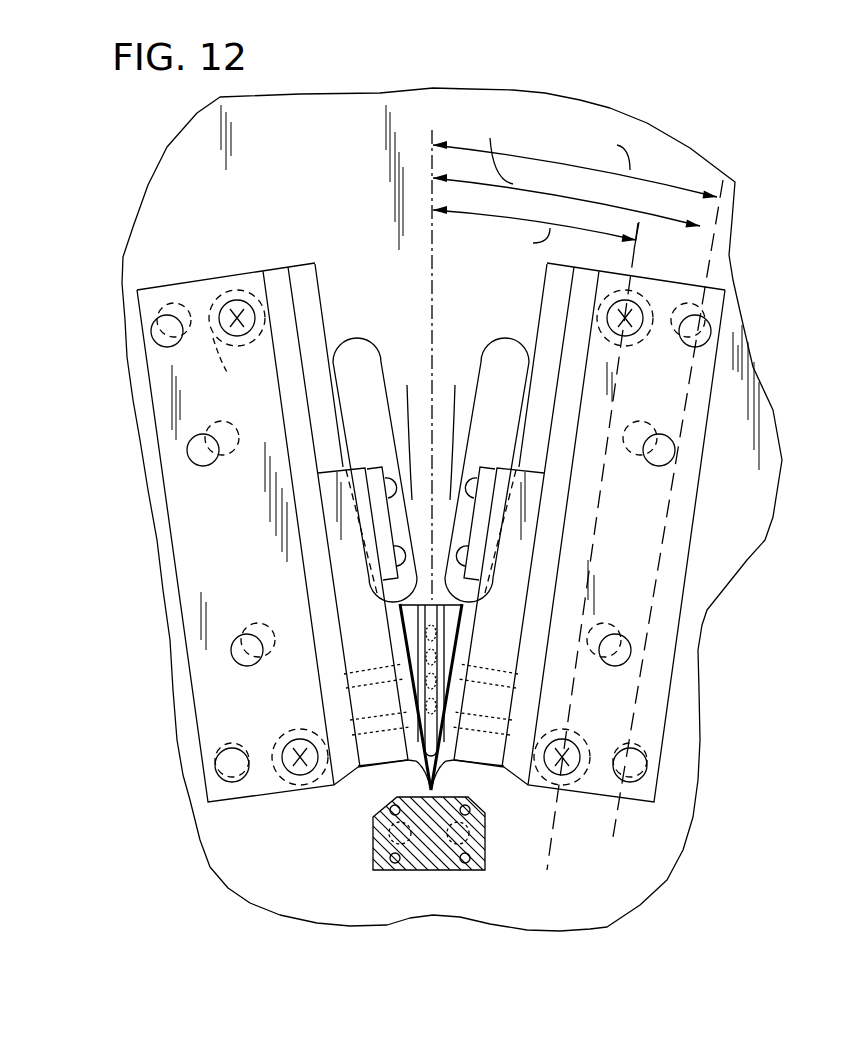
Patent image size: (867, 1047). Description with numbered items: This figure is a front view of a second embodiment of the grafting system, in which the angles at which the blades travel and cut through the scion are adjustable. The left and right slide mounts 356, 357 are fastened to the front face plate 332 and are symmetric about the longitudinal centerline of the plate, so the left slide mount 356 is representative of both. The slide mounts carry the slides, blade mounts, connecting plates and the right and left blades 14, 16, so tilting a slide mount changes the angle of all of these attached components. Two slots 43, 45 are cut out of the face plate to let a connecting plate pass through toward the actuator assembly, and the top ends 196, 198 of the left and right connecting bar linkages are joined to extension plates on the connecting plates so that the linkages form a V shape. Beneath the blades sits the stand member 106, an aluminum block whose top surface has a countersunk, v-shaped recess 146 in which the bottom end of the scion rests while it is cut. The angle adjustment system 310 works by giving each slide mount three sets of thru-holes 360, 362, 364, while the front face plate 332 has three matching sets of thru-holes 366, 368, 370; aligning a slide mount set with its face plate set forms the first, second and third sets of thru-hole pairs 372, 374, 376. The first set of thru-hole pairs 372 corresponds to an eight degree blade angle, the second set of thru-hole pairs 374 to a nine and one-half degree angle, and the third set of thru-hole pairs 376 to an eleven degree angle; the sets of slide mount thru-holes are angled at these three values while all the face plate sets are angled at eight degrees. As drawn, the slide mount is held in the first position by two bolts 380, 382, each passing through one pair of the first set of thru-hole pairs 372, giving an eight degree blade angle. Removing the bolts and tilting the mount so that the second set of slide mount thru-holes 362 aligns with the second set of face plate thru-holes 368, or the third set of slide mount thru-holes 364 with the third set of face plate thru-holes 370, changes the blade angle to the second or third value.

The angle adjustment system 310 is at (120, 574).
The front face plate 332 is at (727, 552).
The left slide mount 356 is at (175, 280).
The right slide mount 357 is at (728, 261).
The first set of thru-hole pairs 372 is at (285, 218).
The first set of slide mount thru-holes 360 is at (220, 302).
The first set of face plate thru-holes 366 is at (241, 275).
The bolt 380 is at (230, 372).
The bolt 382 is at (292, 727).
The second set of thru-hole pairs 374 is at (63, 293).
The second set of face plate thru-holes 368 is at (175, 306).
The second set of slide mount thru-holes 362 is at (152, 348).
The third set of thru-hole pairs 376 is at (72, 412).
The third set of face plate thru-holes 370 is at (205, 421).
The third set of slide mount thru-holes 364 is at (187, 468).
The slot 43 is at (350, 350).
The slot 45 is at (512, 350).
The top end of left connecting bar linkage 196 is at (406, 428).
The top end of right connecting bar linkage 198 is at (462, 428).
The left blade 16 is at (397, 640).
The right blade 14 is at (465, 640).
The recess 146 is at (433, 795).
The stand member 106 is at (484, 838).